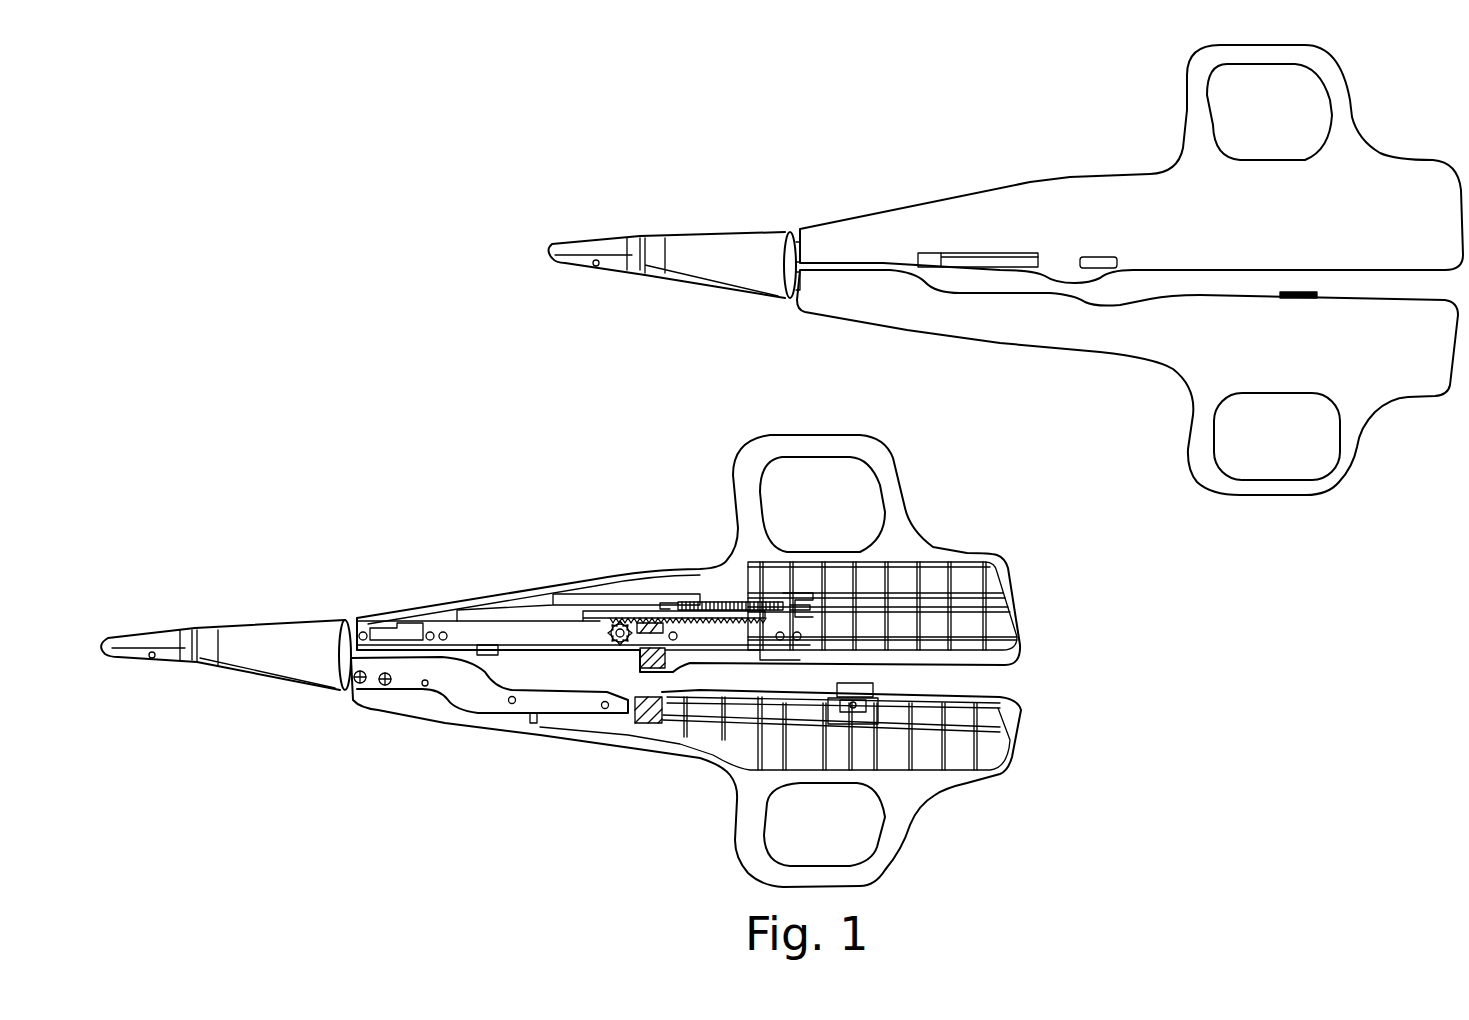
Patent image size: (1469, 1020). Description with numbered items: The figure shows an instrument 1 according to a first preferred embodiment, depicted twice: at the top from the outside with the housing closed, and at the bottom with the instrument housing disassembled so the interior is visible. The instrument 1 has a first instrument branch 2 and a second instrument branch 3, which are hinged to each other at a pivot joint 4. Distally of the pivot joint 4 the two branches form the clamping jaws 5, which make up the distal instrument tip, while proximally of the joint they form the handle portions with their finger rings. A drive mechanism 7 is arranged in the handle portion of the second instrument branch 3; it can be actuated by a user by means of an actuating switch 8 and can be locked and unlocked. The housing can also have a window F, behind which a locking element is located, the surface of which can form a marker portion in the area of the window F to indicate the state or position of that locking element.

The instrument 1 is at (462, 238).
The first instrument branch 2 is at (1193, 113).
The second instrument branch 3 is at (1275, 485).
The pivot joint 4 is at (712, 255).
The clamping jaws 5 is at (600, 245).
The drive mechanism 7 is at (556, 630).
The actuating switch 8 is at (955, 255).
The window F is at (1097, 257).